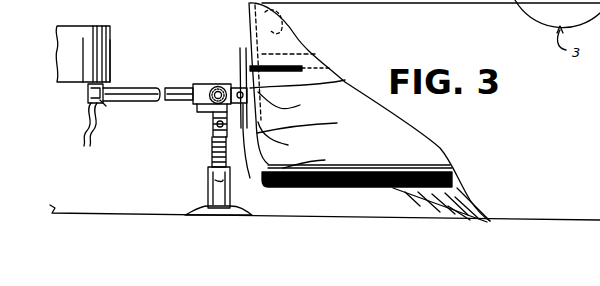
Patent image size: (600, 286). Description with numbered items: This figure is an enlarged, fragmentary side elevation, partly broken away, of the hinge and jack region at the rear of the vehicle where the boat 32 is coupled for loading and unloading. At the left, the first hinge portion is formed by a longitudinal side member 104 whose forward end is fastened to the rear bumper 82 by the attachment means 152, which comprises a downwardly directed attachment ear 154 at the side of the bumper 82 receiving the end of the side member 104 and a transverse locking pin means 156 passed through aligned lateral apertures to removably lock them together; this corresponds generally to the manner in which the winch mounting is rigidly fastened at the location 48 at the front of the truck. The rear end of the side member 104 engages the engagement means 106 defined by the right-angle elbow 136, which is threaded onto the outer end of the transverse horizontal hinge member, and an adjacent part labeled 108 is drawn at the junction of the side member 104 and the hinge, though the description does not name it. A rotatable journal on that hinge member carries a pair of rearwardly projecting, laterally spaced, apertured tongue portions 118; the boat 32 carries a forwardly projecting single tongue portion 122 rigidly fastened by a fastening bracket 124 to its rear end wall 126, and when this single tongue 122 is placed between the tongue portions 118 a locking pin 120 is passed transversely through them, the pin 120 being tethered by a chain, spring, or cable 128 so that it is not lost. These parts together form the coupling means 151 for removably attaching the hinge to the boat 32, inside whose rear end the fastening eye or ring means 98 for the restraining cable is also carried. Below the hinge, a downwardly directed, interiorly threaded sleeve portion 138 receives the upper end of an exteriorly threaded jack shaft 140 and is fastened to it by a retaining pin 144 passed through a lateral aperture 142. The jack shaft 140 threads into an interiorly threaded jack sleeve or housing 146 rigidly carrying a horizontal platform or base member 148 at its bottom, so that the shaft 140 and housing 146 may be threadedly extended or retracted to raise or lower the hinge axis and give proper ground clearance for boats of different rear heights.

The rear bumper 82 is at (78, 15).
The location of rigid fastening 48 is at (88, 3).
The attachment means 152 is at (121, 58).
The longitudinal side member 104 is at (150, 83).
The engagement means 106 is at (191, 72).
The bearing housing 108 is at (228, 66).
The fastening eye or ring means 98 is at (287, 27).
The tongue portions 118 is at (300, 41).
The rear end wall 126 is at (304, 59).
The locking pin 120 is at (350, 79).
The fastening bracket 124 is at (294, 104).
The coupling means 151 is at (313, 126).
The single tongue portion 122 is at (288, 139).
The chain, spring, or cable 128 is at (317, 159).
The boat 32 is at (369, 112).
The right-angle elbow 136 is at (205, 108).
The interiorly threaded sleeve portion 138 is at (197, 112).
The jack shaft 140 is at (212, 146).
The retaining pin 144 is at (205, 125).
The jack sleeve or housing 146 is at (208, 178).
The horizontal platform or base member 148 is at (188, 212).
The attachment ears 154 is at (82, 125).
The transverse locking pin means 156 is at (88, 153).
The lateral aperture 142 is at (248, 175).